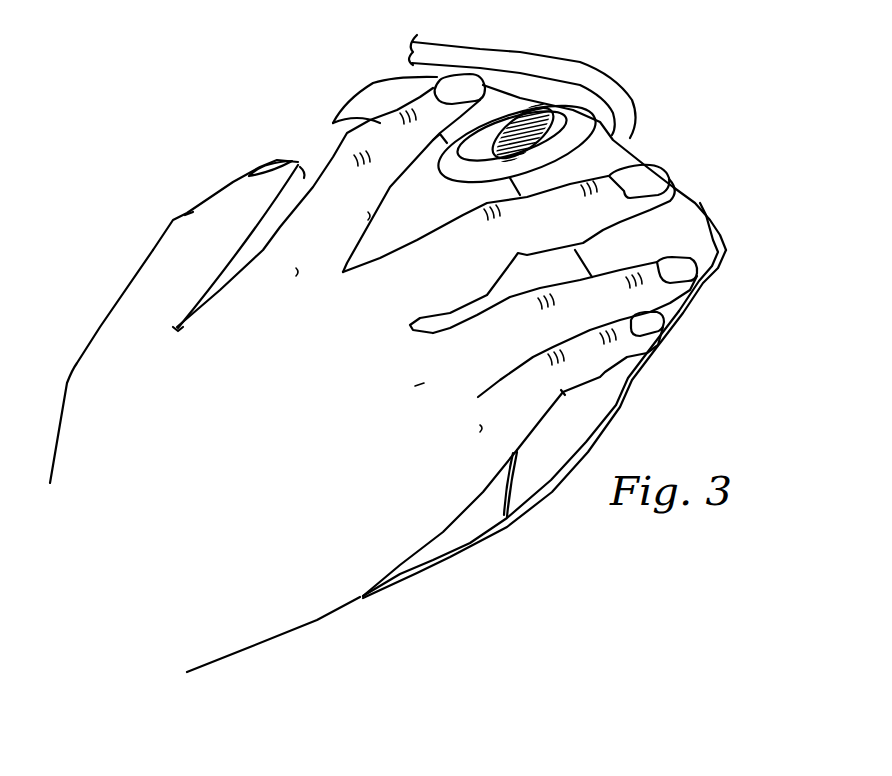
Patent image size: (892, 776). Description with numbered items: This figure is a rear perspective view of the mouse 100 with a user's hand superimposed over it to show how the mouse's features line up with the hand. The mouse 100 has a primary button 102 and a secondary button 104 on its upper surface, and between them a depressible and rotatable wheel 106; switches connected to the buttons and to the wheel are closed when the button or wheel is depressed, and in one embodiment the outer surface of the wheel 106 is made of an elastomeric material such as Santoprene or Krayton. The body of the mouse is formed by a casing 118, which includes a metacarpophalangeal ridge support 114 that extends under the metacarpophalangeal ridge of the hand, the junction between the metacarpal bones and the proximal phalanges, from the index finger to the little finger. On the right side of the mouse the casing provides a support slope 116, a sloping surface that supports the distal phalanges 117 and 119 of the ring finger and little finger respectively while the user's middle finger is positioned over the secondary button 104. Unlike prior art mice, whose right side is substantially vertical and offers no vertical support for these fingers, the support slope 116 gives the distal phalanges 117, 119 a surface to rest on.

The mouse 100 is at (196, 155).
The primary button 102 is at (393, 97).
The secondary button 104 is at (597, 155).
The depressible and rotatable wheel 106 is at (543, 110).
The metacarpophalangeal ridge support 114 is at (298, 163).
The support slope 116 is at (700, 255).
The distal phalanx of the ring finger 117 is at (670, 290).
The casing 118 is at (473, 540).
The distal phalanx of the little finger 119 is at (637, 358).